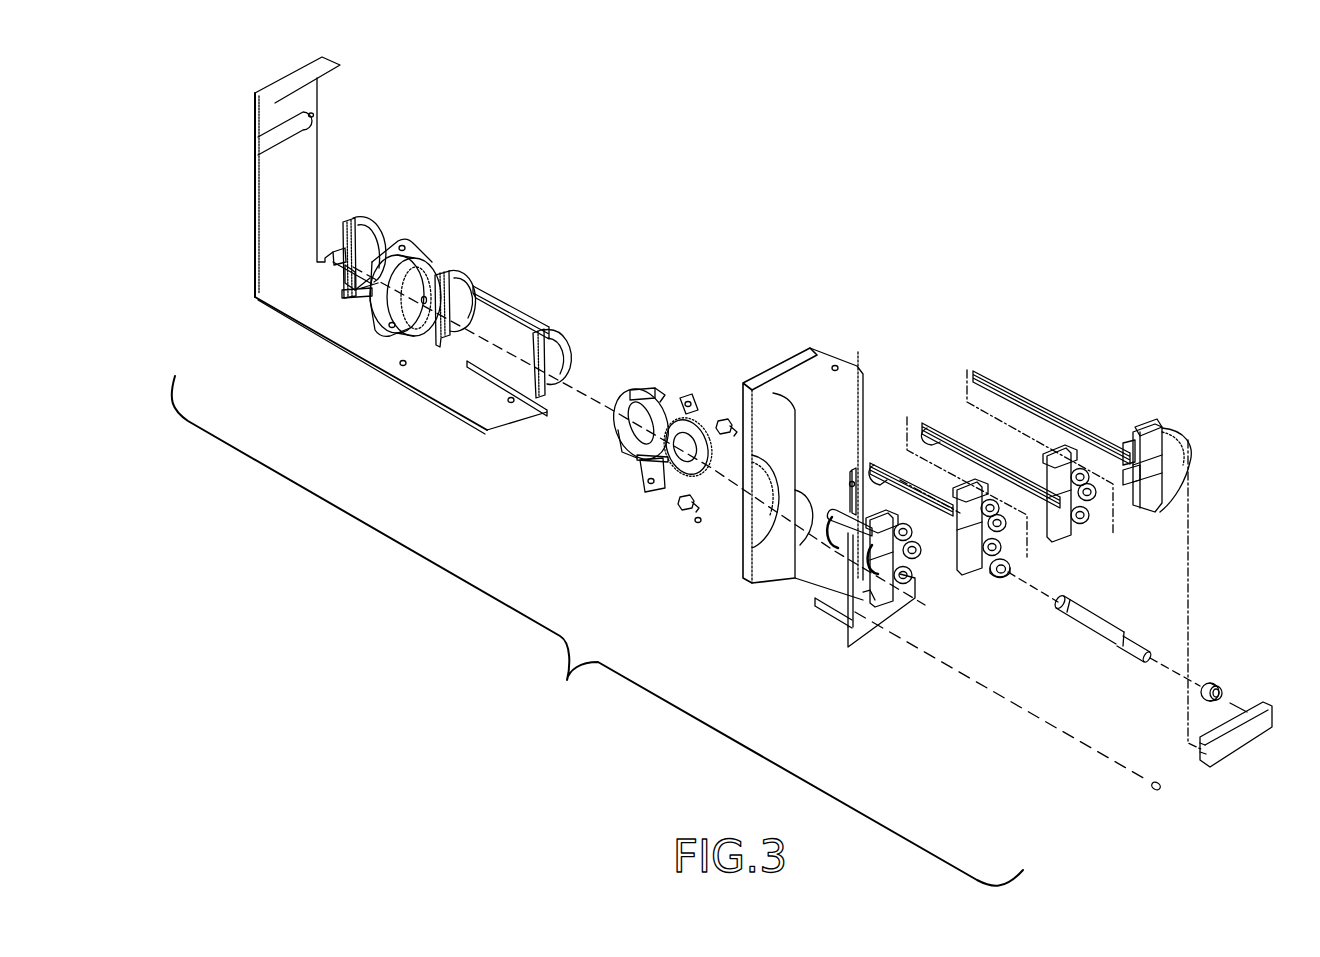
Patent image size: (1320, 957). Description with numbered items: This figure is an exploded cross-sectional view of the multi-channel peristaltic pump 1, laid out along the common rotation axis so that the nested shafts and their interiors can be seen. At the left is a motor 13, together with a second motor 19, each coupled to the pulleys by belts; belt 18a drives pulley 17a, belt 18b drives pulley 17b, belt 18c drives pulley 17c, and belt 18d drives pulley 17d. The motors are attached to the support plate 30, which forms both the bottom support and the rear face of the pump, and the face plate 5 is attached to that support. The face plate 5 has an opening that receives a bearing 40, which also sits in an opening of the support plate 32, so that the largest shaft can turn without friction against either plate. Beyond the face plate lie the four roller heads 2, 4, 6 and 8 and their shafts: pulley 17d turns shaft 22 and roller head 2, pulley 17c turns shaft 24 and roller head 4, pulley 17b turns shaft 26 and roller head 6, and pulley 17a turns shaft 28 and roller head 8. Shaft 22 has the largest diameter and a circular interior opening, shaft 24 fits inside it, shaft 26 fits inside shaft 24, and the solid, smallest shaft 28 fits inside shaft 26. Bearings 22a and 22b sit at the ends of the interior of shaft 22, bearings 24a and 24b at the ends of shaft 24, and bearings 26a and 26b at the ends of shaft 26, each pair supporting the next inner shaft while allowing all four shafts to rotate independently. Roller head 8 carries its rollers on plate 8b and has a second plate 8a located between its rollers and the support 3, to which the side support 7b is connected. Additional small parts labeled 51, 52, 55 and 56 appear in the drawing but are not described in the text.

The multi-channel peristaltic pump 1 is at (597, 631).
The roller head 2 is at (893, 577).
The support 3 is at (1220, 750).
The roller head 4 is at (983, 547).
The face plate 5 is at (843, 390).
The roller head 6 is at (1067, 522).
The support 7b is at (1138, 645).
The roller head 8 is at (1162, 430).
The second plate 8a is at (1177, 462).
The plate 8b is at (1140, 427).
The motor 13 is at (387, 310).
The pulley 17a is at (357, 220).
The pulley 17b is at (467, 290).
The pulley 17c is at (557, 383).
The pulley 17d is at (660, 393).
The belt 18a is at (367, 237).
The belt 18b is at (447, 273).
The belt 18c is at (553, 340).
The belt 18d is at (660, 460).
The motor 19 is at (638, 457).
The shaft 22 is at (845, 565).
The bearing 22a is at (803, 590).
The bearing 22b is at (850, 560).
The shaft 24 is at (922, 425).
The bearing 24a is at (875, 470).
The bearing 24b is at (963, 573).
The shaft 26 is at (975, 445).
The bearing 26a is at (945, 425).
The bearing 26b is at (1057, 492).
The shaft 28 is at (1062, 424).
The support plate 30 is at (433, 373).
The support plate 32 is at (763, 393).
The bearing 40 is at (683, 440).
The rail 51 is at (510, 307).
The screw 52 is at (726, 435).
The collar 55 is at (1210, 685).
The bearing 56 is at (996, 578).